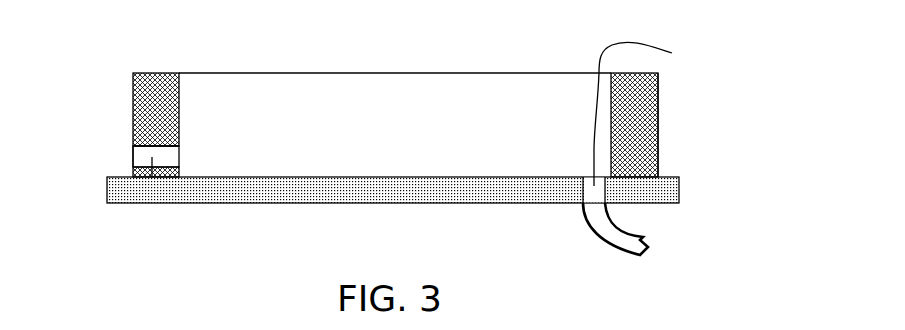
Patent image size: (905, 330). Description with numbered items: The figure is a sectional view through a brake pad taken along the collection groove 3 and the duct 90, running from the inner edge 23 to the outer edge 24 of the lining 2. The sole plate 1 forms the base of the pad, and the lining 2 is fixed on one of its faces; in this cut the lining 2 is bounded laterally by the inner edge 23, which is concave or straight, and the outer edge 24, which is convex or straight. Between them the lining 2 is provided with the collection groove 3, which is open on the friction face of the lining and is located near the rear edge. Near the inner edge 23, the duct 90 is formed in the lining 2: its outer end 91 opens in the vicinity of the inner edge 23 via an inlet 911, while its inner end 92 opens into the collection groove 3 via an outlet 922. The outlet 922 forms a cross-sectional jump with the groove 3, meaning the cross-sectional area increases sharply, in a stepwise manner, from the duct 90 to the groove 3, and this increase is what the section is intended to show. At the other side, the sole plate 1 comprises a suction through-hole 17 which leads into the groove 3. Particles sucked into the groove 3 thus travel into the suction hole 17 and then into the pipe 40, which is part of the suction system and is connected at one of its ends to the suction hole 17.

The sole plate 1 is at (333, 192).
The lining 2 is at (643, 108).
The collection groove 3 is at (498, 117).
The suction through-hole 17 is at (640, 122).
The inner edge 23 is at (132, 98).
The outer edge 24 is at (658, 138).
The pipe 40 is at (623, 232).
The duct 90 is at (152, 157).
The outer end 91 is at (135, 165).
The inner end 92 is at (178, 163).
The inlet 911 is at (133, 150).
The outlet 922 is at (179, 153).